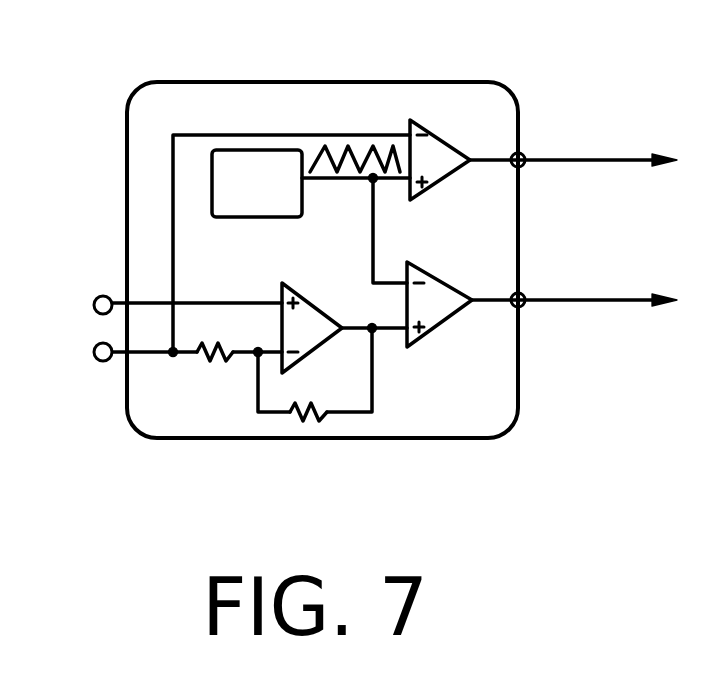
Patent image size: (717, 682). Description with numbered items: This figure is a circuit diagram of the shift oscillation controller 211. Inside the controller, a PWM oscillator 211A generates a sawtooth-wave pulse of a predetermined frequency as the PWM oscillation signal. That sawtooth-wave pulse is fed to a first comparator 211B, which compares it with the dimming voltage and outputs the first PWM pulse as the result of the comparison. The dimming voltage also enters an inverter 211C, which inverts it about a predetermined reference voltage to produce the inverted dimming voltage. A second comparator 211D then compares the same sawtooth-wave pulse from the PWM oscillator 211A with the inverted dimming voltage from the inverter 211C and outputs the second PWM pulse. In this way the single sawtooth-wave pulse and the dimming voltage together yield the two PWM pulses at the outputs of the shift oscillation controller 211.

The shift oscillation controller 211 is at (136, 93).
The PWM oscillator 211A is at (240, 217).
The first comparator 211B is at (452, 177).
The inverter 211C is at (310, 298).
The second comparator 211D is at (452, 316).